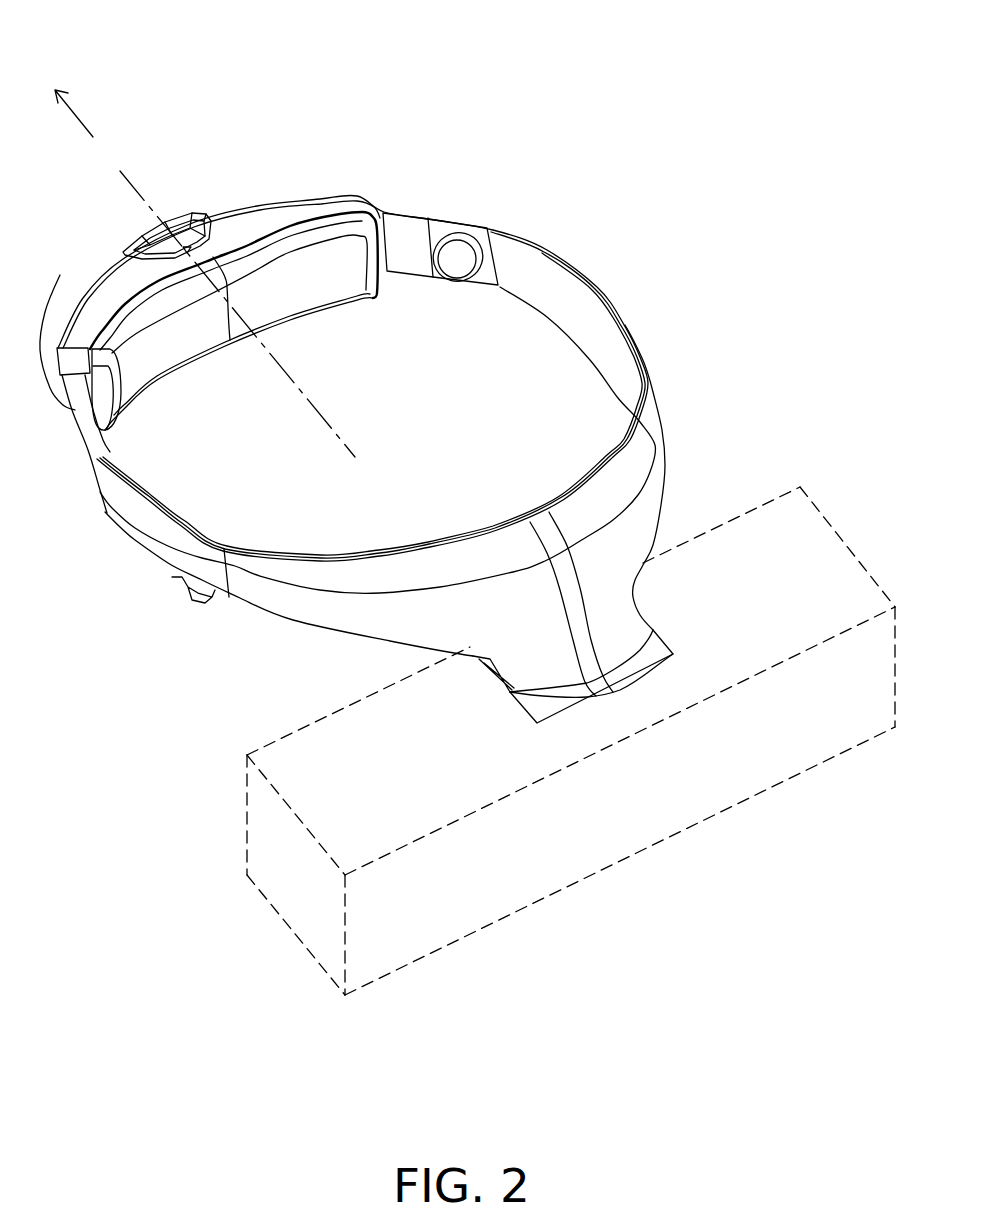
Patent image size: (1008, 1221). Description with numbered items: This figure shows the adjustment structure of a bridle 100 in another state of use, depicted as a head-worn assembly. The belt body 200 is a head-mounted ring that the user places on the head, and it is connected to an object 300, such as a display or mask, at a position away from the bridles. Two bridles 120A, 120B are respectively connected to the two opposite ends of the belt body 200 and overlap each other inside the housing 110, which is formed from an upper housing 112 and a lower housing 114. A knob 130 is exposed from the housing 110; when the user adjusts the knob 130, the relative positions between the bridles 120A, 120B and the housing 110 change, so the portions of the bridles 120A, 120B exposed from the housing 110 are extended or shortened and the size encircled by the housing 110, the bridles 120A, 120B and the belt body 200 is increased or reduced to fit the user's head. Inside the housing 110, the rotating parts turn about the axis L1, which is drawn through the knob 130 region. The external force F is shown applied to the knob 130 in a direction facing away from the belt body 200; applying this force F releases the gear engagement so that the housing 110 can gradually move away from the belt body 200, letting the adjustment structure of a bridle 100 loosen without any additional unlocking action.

The adjustment structure of a bridle 100 is at (383, 130).
The housing 110 is at (327, 118).
The upper housing 112 is at (257, 203).
The lower housing 114 is at (317, 267).
The bridle 120A is at (412, 230).
The bridle 120B is at (60, 275).
The knob 130 is at (183, 222).
The belt body 200 is at (592, 323).
The object 300 is at (742, 507).
The axis L1 is at (227, 295).
The external force F is at (74, 99).